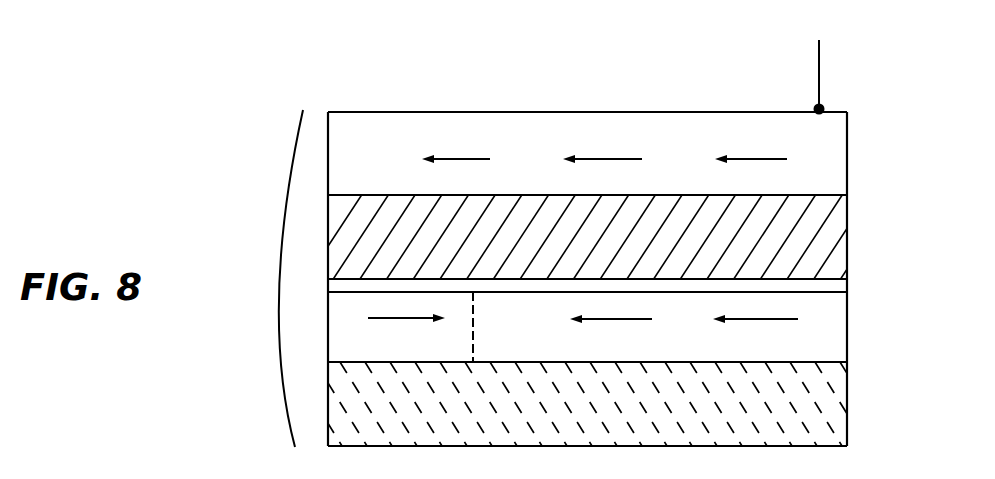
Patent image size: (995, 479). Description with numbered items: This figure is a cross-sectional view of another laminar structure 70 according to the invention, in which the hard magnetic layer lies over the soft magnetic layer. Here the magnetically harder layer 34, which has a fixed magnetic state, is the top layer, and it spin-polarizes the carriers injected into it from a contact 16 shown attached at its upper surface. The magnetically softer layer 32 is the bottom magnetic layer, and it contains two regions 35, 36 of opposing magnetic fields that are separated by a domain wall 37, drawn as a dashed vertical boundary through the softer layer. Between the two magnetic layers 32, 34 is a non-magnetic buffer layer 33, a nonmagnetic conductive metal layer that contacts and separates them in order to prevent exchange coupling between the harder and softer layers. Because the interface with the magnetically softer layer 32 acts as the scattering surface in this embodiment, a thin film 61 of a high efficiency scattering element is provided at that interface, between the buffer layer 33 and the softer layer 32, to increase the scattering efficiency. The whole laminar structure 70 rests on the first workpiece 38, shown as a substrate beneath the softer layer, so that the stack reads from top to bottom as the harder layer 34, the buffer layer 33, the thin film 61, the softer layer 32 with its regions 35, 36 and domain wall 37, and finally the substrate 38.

The contact 16 is at (816, 106).
The magnetically softer layer 32 is at (365, 353).
The non-magnetic buffer layer 33 is at (378, 249).
The magnetically harder layer 34 is at (373, 171).
The region of the softer layer on one side of the domain wall 35 is at (457, 353).
The region of the softer layer on the other side of the domain wall 36 is at (557, 353).
The domain wall 37 is at (474, 329).
The first workpiece 38 is at (407, 413).
The thin film of a high efficiency scattering element 61 is at (847, 287).
The laminar structure 70 is at (260, 278).